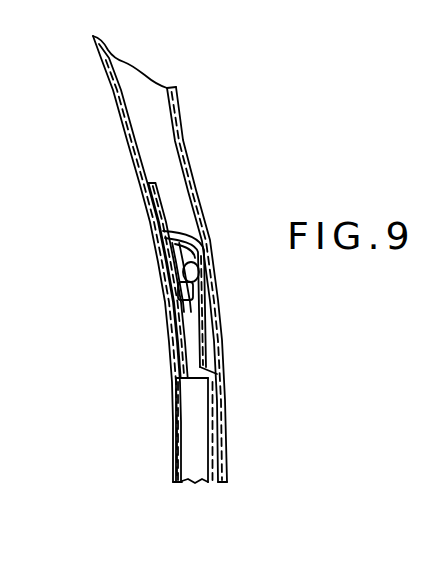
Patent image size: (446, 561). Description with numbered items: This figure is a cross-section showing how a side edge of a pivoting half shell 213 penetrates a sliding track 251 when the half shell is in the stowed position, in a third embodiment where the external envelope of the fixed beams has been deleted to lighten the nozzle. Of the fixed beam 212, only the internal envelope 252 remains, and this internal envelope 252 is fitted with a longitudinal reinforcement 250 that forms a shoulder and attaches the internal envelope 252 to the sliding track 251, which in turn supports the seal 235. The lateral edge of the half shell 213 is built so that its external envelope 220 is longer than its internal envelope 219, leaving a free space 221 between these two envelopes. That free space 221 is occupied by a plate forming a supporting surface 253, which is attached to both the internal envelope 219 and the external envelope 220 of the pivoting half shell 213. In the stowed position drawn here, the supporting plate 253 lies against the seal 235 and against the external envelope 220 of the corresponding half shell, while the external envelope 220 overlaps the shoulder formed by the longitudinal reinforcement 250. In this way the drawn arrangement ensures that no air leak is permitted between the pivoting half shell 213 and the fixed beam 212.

The internal envelope 219 is at (107, 259).
The external envelope 220 is at (214, 284).
The half shell 213 is at (152, 120).
The free space 221 is at (213, 185).
The seal 235 is at (148, 277).
The sliding track 251 is at (146, 280).
The supporting surface 253 is at (222, 302).
The longitudinal reinforcement 250 is at (244, 430).
The internal envelope 252 is at (137, 430).
The fixed beam 212 is at (140, 465).